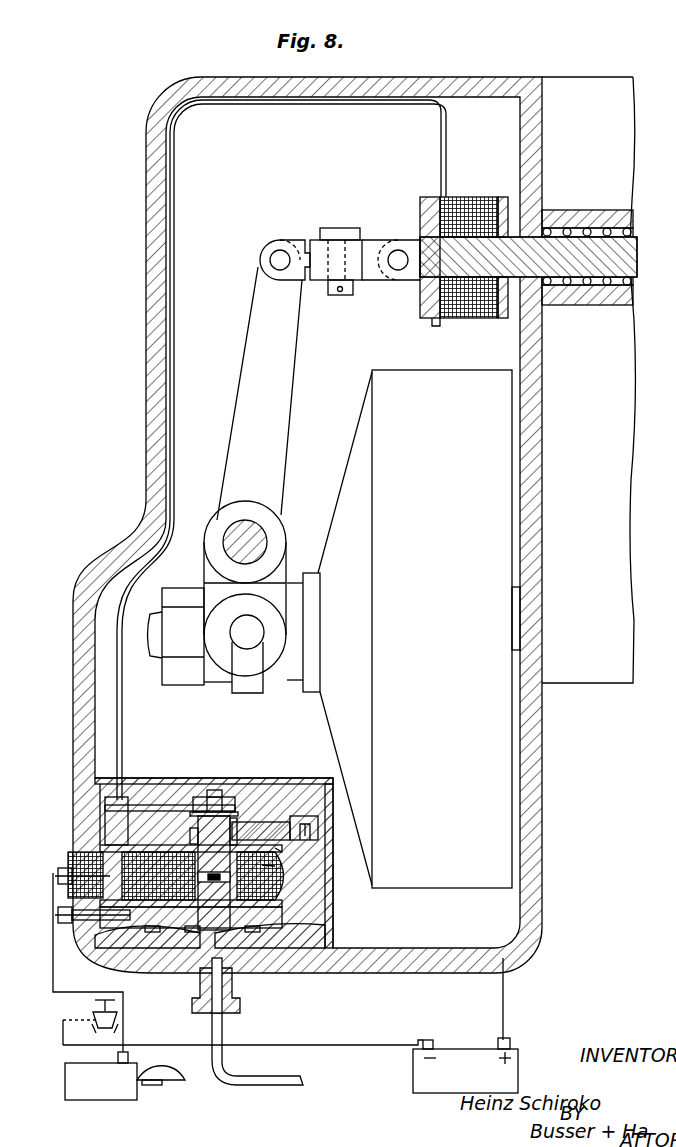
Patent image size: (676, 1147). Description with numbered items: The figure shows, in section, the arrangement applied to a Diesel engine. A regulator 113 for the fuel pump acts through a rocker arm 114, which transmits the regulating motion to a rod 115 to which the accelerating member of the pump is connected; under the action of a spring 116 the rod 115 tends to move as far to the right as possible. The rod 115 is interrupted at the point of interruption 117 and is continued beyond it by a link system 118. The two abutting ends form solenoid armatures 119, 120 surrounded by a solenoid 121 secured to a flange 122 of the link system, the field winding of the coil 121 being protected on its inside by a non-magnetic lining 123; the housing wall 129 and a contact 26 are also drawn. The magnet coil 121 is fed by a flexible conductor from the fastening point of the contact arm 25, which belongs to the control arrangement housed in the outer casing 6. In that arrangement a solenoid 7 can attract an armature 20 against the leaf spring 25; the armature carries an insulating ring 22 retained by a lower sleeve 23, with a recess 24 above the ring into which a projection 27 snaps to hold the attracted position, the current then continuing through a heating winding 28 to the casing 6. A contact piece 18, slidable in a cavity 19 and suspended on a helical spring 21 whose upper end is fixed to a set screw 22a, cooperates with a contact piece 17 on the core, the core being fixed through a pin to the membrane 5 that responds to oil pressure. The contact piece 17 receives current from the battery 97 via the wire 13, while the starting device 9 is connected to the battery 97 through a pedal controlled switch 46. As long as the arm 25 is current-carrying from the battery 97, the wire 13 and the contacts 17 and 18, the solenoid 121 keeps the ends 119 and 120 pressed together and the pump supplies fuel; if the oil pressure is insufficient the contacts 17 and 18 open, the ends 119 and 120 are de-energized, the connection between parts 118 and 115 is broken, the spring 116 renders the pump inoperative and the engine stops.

The housing wall 129 is at (544, 110).
The rod 115 is at (560, 248).
The spring 116 is at (587, 294).
The non-magnetic lining 123 is at (483, 227).
The point of interruption 117 is at (437, 250).
The solenoid 121 is at (452, 207).
The solenoid armature 119 is at (453, 292).
The solenoid armature 120 is at (492, 298).
The flange 122 is at (430, 298).
The link system 118 is at (368, 245).
The rocker arm 114 is at (256, 327).
The regulator 113 is at (497, 518).
The outer casing 6 is at (296, 779).
The contact piece 17 is at (331, 912).
The wire 13 is at (118, 952).
The leaf spring 25 is at (136, 805).
The armature 20 is at (186, 808).
The set screw 22a is at (222, 795).
The lower sleeve 23 is at (215, 848).
The insulating ring 22 is at (198, 834).
The solenoid 7 is at (125, 852).
The contact piece 18 is at (255, 870).
The cavity 19 is at (262, 865).
The helical spring 21 is at (275, 848).
The projection 27 is at (240, 832).
The recess 24 is at (236, 830).
The heating winding 28 is at (272, 826).
The contact 26 is at (290, 826).
The membrane 5 is at (181, 968).
The pedal controlled switch 46 is at (118, 1016).
The electrical starting device 9 is at (125, 1073).
The battery 97 is at (456, 1052).